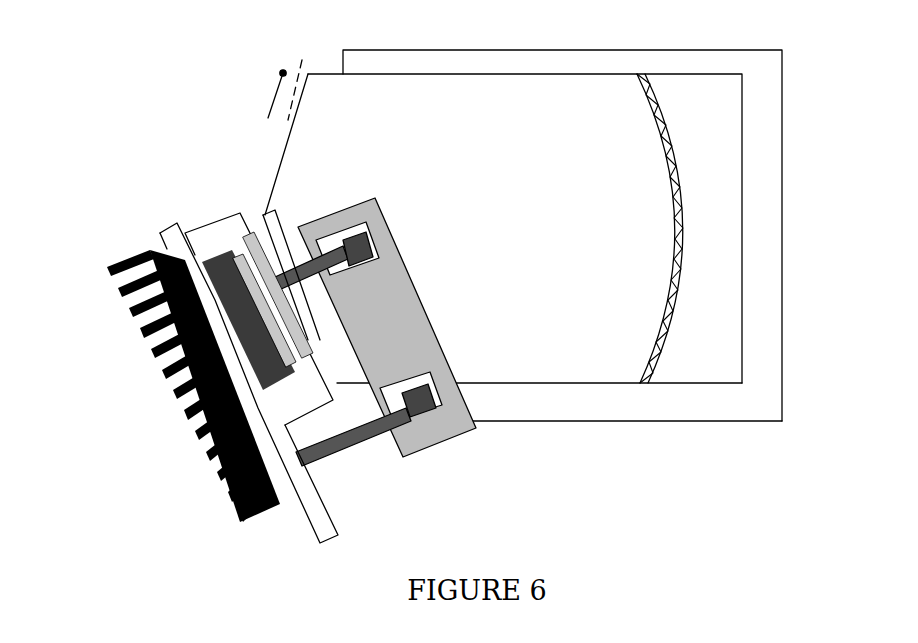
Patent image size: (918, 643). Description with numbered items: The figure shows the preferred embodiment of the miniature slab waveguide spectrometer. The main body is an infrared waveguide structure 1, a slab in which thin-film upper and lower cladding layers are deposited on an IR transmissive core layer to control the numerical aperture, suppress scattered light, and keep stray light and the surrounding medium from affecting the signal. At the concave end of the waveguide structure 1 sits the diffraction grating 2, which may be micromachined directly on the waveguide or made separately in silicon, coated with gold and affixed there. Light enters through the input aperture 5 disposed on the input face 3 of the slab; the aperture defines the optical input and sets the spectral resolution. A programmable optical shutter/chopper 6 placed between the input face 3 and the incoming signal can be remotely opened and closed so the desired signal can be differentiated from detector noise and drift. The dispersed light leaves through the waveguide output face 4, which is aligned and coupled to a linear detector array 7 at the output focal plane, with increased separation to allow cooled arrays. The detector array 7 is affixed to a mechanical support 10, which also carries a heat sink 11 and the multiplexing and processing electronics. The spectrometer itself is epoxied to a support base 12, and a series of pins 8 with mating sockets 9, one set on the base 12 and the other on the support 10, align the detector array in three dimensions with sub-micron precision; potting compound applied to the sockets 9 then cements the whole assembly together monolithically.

The infrared waveguide structure 1 is at (545, 235).
The diffraction grating 2 is at (664, 330).
The input face 3 is at (289, 144).
The waveguide output face 4 is at (283, 253).
The input aperture 5 is at (298, 79).
The programmable optical shutter/chopper 6 is at (278, 71).
The linear detector array 7 is at (230, 253).
The pins 8 is at (352, 440).
The mating sockets 9 is at (452, 425).
The mechanical support 10 is at (322, 518).
The heat sink 11 is at (133, 319).
The support base 12 is at (559, 402).